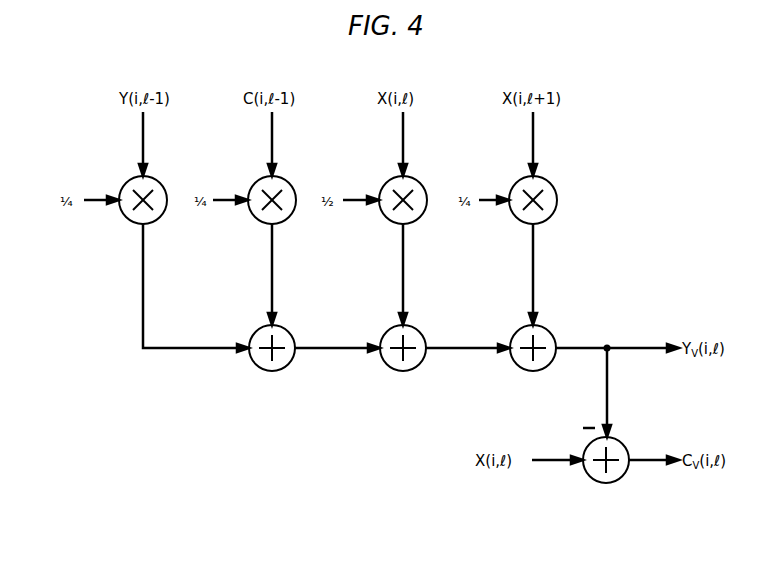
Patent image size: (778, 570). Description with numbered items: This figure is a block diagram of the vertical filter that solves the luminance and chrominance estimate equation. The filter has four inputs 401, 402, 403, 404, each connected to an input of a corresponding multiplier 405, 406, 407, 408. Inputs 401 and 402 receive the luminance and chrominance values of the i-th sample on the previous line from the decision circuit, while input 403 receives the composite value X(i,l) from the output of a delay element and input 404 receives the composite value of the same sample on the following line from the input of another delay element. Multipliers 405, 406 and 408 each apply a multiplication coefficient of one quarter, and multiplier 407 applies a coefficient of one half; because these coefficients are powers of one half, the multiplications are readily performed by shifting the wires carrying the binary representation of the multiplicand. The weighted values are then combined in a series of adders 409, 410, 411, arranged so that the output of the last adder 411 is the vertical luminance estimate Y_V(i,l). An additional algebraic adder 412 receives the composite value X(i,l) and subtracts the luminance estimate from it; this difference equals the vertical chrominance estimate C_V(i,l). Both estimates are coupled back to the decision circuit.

The input 401 is at (143, 146).
The input 402 is at (272, 146).
The input 403 is at (403, 146).
The input 404 is at (533, 146).
The multiplier 405 is at (160, 218).
The multiplier 406 is at (289, 218).
The multiplier 407 is at (418, 219).
The multiplier 408 is at (548, 219).
The adder 409 is at (262, 371).
The adder 410 is at (392, 371).
The adder 411 is at (523, 371).
The algebraic adder 412 is at (608, 484).